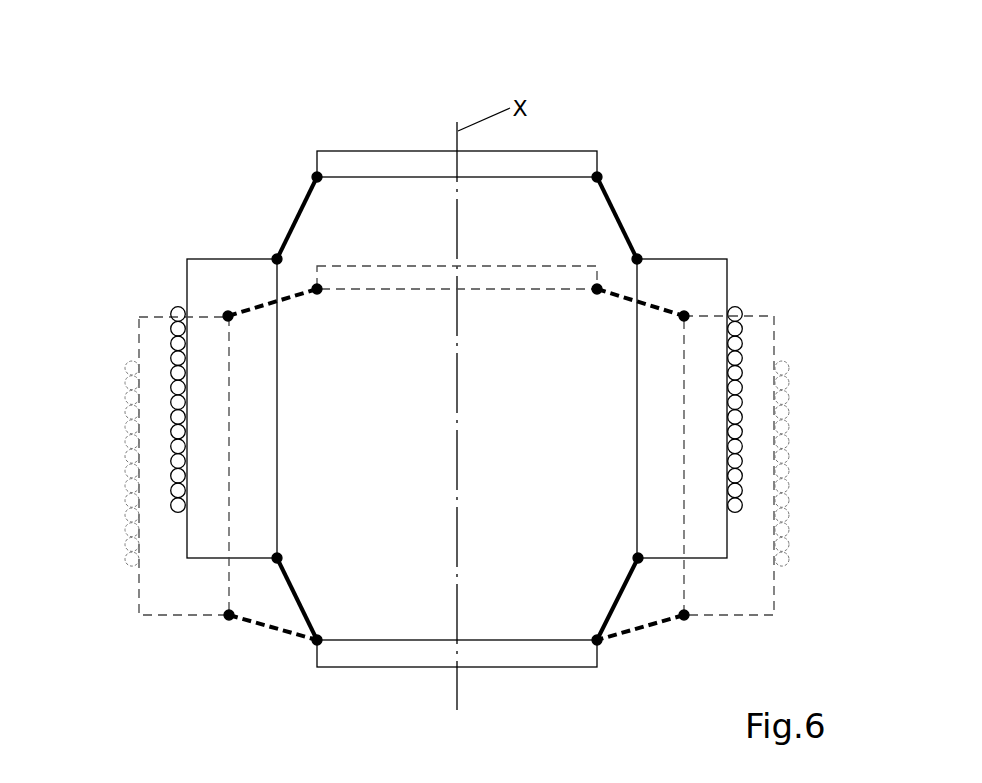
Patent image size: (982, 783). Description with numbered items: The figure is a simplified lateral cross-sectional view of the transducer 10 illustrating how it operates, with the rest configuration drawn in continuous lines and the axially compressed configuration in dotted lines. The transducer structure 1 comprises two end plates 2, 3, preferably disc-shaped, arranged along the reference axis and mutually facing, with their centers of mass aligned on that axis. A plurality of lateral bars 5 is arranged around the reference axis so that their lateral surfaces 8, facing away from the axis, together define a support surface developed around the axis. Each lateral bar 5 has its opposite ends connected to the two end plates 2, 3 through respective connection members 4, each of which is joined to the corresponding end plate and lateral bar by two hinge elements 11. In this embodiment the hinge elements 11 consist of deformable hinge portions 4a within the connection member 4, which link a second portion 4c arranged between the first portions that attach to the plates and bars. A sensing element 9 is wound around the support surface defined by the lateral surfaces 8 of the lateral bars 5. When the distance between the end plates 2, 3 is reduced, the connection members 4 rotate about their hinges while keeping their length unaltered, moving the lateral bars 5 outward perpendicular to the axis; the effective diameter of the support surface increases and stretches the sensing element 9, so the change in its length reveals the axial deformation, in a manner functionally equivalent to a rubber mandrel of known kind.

The transducer 10 is at (168, 142).
The transducer structure 1 is at (693, 380).
The end plate 2 is at (543, 282).
The end plate 3 is at (523, 652).
The connection member 4 is at (719, 619).
The hinge portion 4a is at (275, 557).
The second portion 4c is at (292, 597).
The lateral bar 5 is at (708, 290).
The lateral surface 8 is at (185, 285).
The sensing element 9 is at (733, 377).
The hinge element 11 is at (643, 248).